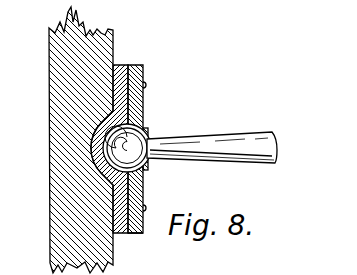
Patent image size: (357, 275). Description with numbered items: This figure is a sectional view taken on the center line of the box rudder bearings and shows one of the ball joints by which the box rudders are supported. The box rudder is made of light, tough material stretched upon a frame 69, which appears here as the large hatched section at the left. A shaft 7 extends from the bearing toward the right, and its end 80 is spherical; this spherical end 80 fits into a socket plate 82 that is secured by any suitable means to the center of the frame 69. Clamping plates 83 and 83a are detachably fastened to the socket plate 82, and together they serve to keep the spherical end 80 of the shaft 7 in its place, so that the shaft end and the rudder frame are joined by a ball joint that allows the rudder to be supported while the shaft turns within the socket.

The shaft 7 is at (218, 141).
The frame 69 is at (55, 108).
The spherical end of the shaft 80 is at (141, 158).
The socket plate 82 is at (116, 64).
The clamping plate 83 is at (152, 157).
The clamping plate 83a is at (136, 234).